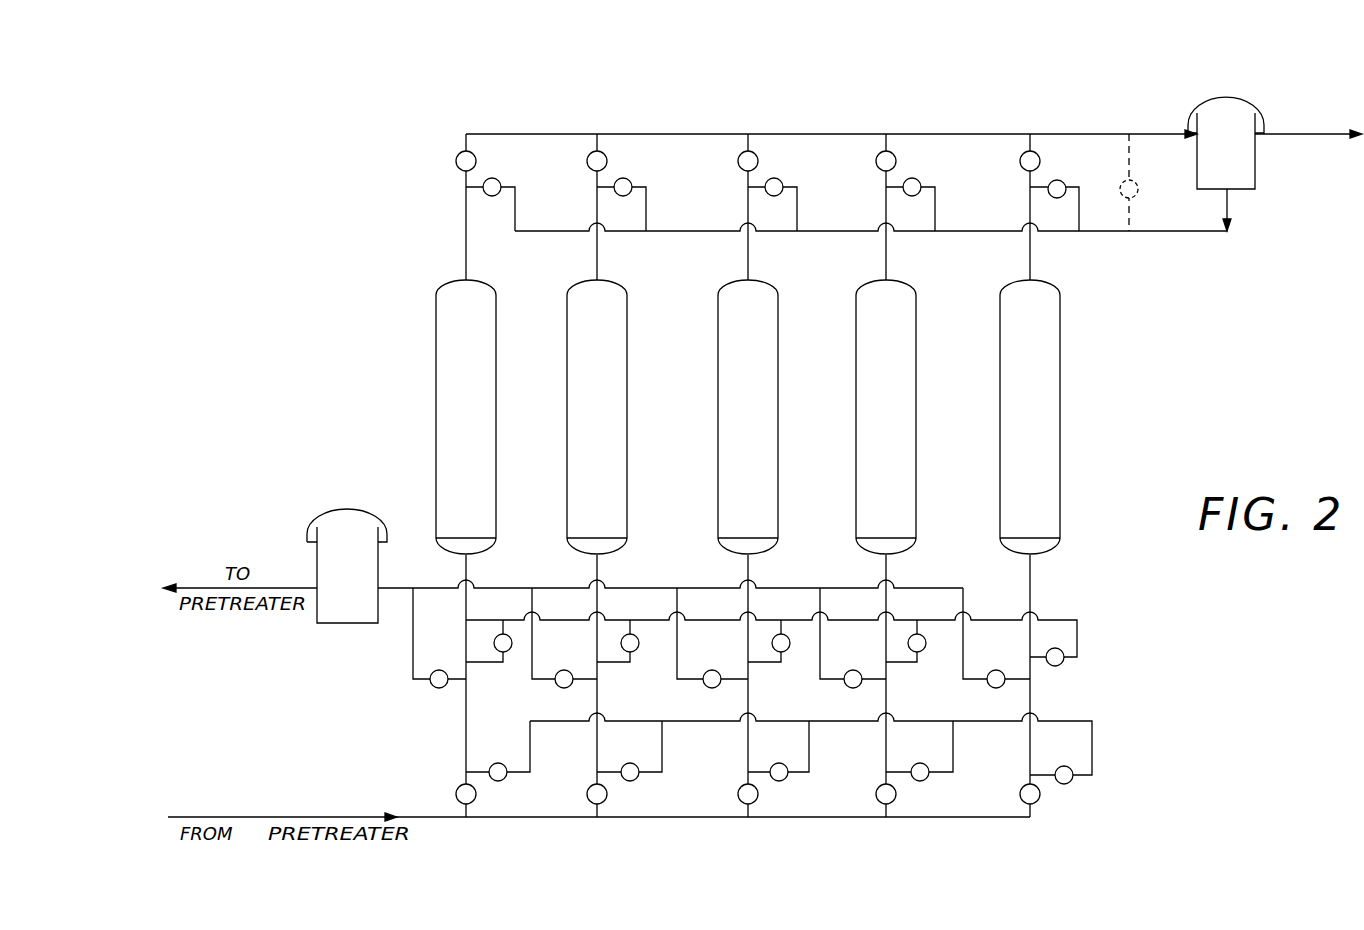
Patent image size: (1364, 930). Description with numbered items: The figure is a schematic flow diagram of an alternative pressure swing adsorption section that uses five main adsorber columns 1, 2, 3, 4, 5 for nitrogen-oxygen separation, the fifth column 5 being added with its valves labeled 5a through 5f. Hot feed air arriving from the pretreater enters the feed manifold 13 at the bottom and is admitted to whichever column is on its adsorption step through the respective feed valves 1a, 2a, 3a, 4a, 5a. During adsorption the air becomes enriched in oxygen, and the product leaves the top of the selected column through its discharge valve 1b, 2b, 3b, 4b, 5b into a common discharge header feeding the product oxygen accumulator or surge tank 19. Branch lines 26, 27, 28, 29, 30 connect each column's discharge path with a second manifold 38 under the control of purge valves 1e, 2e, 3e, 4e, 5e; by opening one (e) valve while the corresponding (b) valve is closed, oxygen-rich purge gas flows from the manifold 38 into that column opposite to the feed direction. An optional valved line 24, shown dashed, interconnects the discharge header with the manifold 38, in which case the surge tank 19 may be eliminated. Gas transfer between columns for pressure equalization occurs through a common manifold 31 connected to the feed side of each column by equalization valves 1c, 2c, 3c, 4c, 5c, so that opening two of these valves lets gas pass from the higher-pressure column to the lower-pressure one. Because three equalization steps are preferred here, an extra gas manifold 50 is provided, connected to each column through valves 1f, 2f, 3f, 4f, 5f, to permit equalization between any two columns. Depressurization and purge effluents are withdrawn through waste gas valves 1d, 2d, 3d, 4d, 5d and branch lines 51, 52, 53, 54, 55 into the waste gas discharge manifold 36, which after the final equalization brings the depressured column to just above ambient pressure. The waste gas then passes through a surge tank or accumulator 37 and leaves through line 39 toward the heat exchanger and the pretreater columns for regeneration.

The main adsorber column 1 is at (466, 417).
The main adsorber column 2 is at (597, 417).
The main adsorber column 3 is at (748, 417).
The main adsorber column 4 is at (886, 417).
The main adsorber column 5 is at (1030, 417).
The feed valve 1a is at (455, 796).
The feed valve 2a is at (587, 800).
The feed valve 3a is at (738, 800).
The feed valve 4a is at (876, 800).
The feed valve 5a is at (1020, 800).
The discharge valve 1b is at (457, 158).
The discharge valve 2b is at (590, 157).
The discharge valve 3b is at (740, 158).
The discharge valve 4b is at (878, 158).
The discharge valve 5b is at (1022, 161).
The equalization valve 1c is at (510, 746).
The equalization valve 2c is at (642, 746).
The equalization valve 3c is at (790, 746).
The equalization valve 4c is at (931, 746).
The equalization valve 5c is at (1073, 765).
The waste gas valve 1d is at (432, 686).
The waste gas valve 2d is at (557, 686).
The waste gas valve 3d is at (705, 686).
The waste gas valve 4d is at (846, 686).
The waste gas valve 5d is at (1005, 686).
The purge valve 1e is at (498, 181).
The purge valve 2e is at (630, 182).
The purge valve 3e is at (781, 182).
The purge valve 4e is at (919, 182).
The purge valve 5e is at (1064, 183).
The pressure equalization valve 1f is at (512, 652).
The pressure equalization valve 2f is at (639, 652).
The pressure equalization valve 3f is at (790, 652).
The pressure equalization valve 4f is at (926, 652).
The pressure equalization valve 5f is at (1048, 665).
The feed manifold 13 is at (705, 818).
The product oxygen accumulator or surge tank 19 is at (1246, 160).
The valved line 24 is at (1137, 194).
The branch line 26 is at (515, 203).
The branch line 27 is at (646, 203).
The branch line 28 is at (797, 203).
The branch line 29 is at (935, 203).
The branch line 30 is at (1079, 203).
The common manifold 31 is at (1070, 721).
The waste gas discharge manifold 36 is at (922, 588).
The surge tank or accumulator 37 is at (359, 584).
The second manifold 38 is at (1158, 232).
The waste gas line 39 is at (201, 585).
The extra gas manifold 50 is at (1050, 620).
The branch line 51 is at (413, 652).
The branch line 52 is at (532, 651).
The branch line 53 is at (677, 651).
The branch line 54 is at (820, 651).
The branch line 55 is at (963, 655).